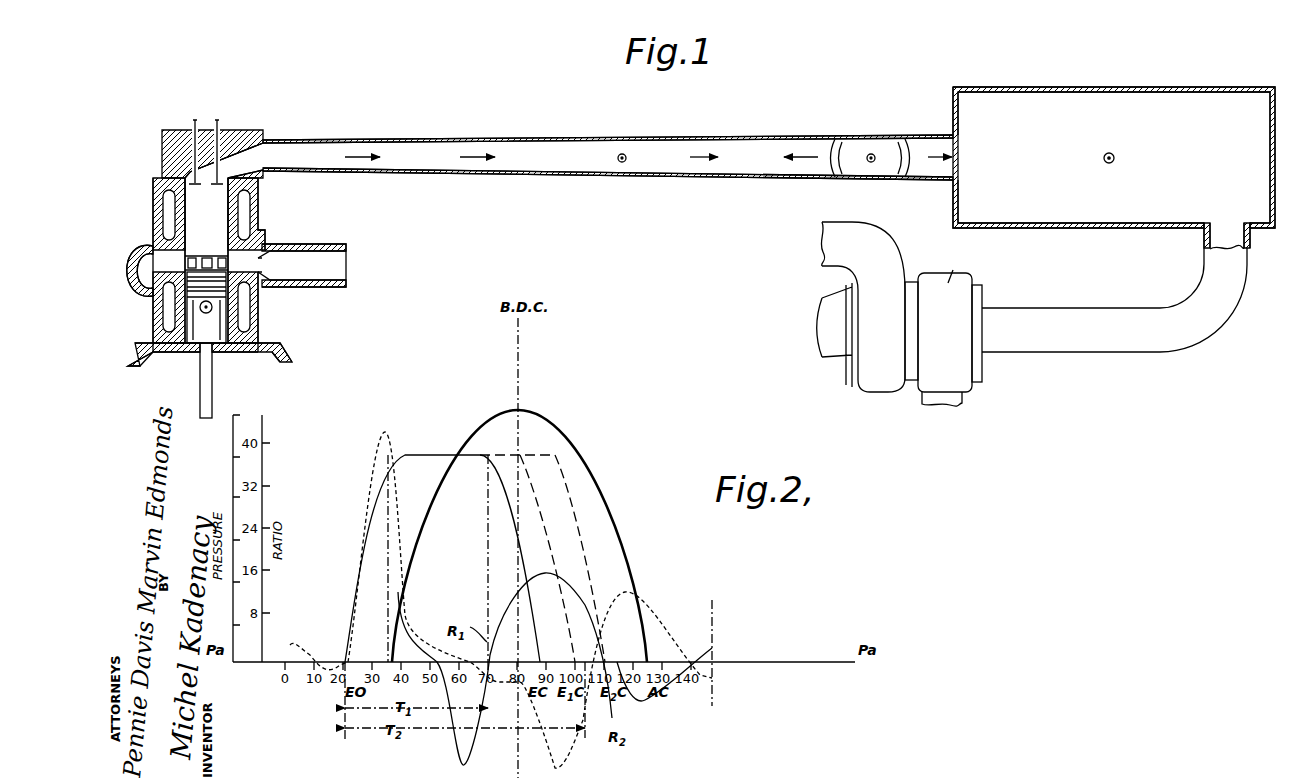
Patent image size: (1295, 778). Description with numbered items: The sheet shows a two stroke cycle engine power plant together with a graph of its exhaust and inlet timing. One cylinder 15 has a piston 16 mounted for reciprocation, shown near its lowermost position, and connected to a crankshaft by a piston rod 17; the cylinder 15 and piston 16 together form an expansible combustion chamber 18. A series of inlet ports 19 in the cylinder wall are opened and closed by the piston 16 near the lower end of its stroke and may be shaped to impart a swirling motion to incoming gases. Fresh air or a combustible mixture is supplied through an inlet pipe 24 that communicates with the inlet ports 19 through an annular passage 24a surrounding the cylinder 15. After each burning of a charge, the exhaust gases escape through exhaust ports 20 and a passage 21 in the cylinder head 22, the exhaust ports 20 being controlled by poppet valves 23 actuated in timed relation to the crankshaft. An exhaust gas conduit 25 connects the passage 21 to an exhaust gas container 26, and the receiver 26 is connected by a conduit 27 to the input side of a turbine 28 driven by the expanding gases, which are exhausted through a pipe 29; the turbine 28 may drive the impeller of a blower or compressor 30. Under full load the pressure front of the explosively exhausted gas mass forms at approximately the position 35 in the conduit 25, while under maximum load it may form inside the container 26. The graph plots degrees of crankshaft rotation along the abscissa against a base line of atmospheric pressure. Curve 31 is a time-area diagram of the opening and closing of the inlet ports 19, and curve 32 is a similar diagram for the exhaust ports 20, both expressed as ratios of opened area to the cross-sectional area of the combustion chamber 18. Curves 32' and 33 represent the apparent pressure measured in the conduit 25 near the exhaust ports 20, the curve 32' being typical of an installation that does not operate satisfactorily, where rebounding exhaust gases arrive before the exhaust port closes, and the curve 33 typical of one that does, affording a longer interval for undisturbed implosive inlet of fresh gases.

In FIG. 1, the cylinder 15 is at (258, 216).
In FIG. 1, the piston 16 is at (218, 320).
In FIG. 1, the piston rod 17 is at (210, 398).
In FIG. 1, the combustion chamber 18 is at (195, 208).
In FIG. 1, the inlet ports 19 is at (306, 235).
In FIG. 1, the exhaust ports 20 is at (192, 134).
In FIG. 1, the exhaust passage 21 is at (250, 150).
In FIG. 1, the cylinder head 22 is at (162, 158).
In FIG. 1, the poppet valves 23 is at (160, 197).
In FIG. 1, the inlet pipe 24 is at (338, 284).
In FIG. 1, the annular passage 24a is at (148, 274).
In FIG. 1, the exhaust gas conduit 25 is at (530, 139).
In FIG. 1, the exhaust gas container 26 is at (997, 87).
In FIG. 1, the conduit 27 is at (1090, 313).
In FIG. 1, the turbine 28 is at (962, 300).
In FIG. 1, the pipe 29 is at (955, 400).
In FIG. 1, the blower or compressor 30 is at (878, 348).
In FIG. 2, the inlet port time-area curve 31 is at (606, 465).
In FIG. 2, the exhaust port time-area curve 32 is at (478, 588).
In FIG. 2, the pressure curve of unsatisfactory installation 32' is at (583, 558).
In FIG. 2, the pressure curve of satisfactory installation 33 is at (418, 628).
In FIG. 1, the pressure front position 35 is at (851, 152).